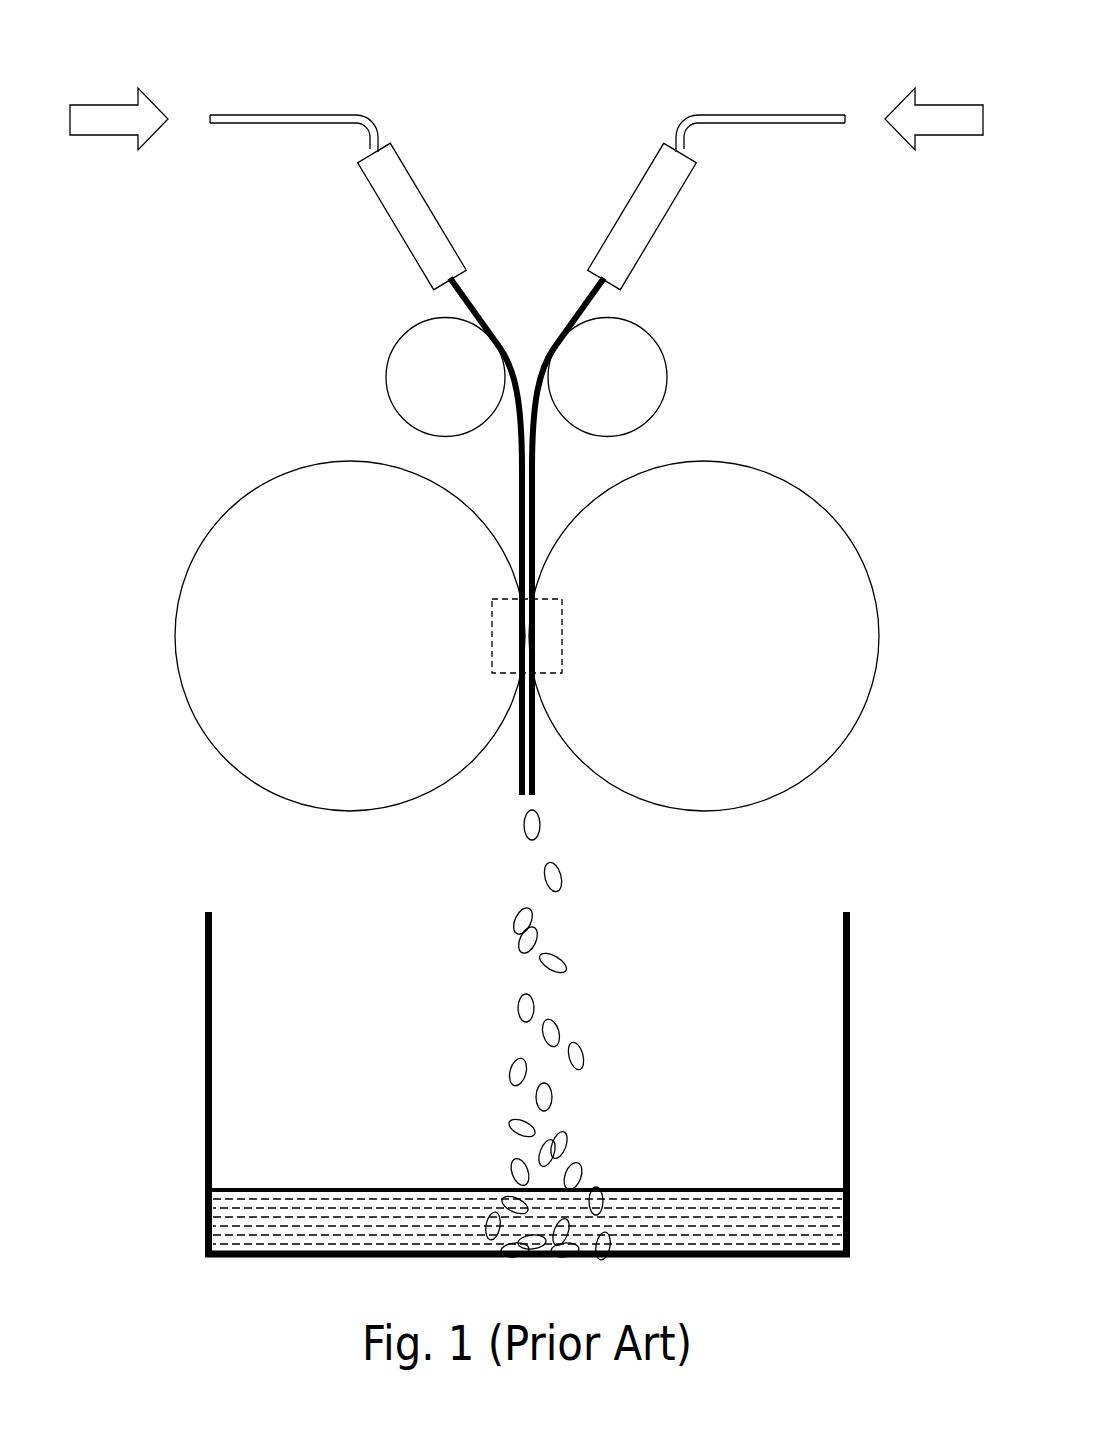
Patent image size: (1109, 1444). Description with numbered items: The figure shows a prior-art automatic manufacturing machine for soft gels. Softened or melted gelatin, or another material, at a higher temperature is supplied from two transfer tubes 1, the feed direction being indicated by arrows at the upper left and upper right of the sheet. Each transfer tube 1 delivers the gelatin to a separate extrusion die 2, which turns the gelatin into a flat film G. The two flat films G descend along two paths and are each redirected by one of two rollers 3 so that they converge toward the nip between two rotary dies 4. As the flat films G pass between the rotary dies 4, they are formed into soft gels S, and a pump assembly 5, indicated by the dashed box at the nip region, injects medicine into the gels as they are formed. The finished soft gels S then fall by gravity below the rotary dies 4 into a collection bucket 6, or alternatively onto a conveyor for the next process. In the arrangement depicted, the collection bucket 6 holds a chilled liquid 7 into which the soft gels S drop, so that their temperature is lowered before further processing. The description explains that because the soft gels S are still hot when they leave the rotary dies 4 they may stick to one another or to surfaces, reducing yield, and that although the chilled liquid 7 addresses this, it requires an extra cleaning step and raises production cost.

The transfer tube 1 is at (337, 115).
The extrusion die 2 is at (385, 207).
The roller 3 is at (393, 357).
The rotary die 4 is at (255, 493).
The pump assembly 5 is at (507, 673).
The collection bucket 6 is at (848, 990).
The chilled liquid 7 is at (663, 1194).
The flat film G is at (477, 302).
The soft gel S is at (562, 873).